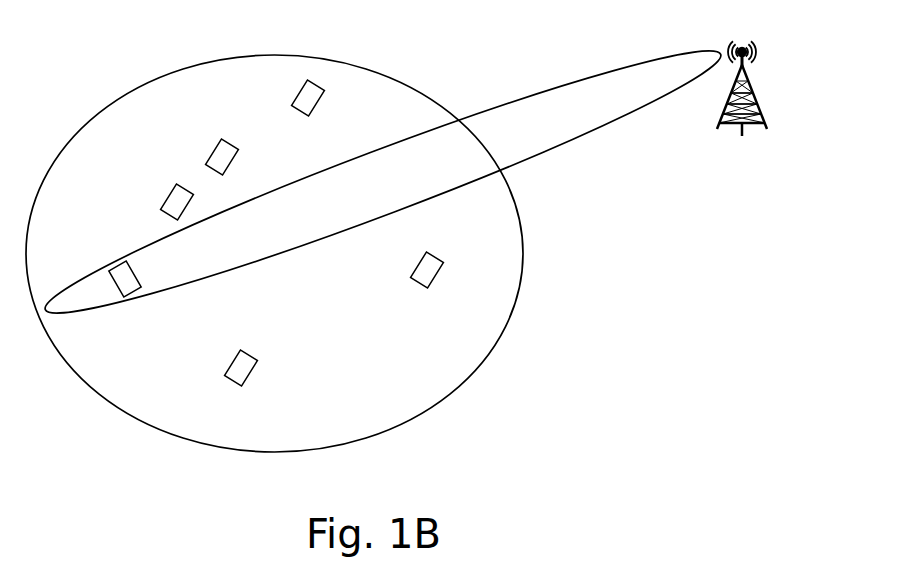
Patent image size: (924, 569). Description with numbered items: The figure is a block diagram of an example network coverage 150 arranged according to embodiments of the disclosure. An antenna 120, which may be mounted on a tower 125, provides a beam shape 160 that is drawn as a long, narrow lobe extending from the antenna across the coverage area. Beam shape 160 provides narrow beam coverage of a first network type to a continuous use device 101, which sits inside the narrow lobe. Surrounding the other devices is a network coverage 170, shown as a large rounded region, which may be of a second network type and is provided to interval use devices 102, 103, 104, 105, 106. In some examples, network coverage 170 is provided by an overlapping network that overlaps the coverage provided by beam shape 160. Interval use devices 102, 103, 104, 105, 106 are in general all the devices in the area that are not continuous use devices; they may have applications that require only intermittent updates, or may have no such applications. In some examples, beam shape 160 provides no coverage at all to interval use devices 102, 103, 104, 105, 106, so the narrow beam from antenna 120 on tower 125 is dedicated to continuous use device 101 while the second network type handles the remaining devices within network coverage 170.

The network coverage 150 is at (98, 54).
The continuous use device 101 is at (106, 270).
The interval use device 102 is at (165, 197).
The interval use device 103 is at (208, 154).
The interval use device 104 is at (296, 92).
The interval use device 105 is at (226, 364).
The interval use device 106 is at (414, 266).
The antenna 120 is at (760, 45).
The tower 125 is at (755, 102).
The beam shape 160 is at (593, 128).
The network coverage 170 is at (497, 340).